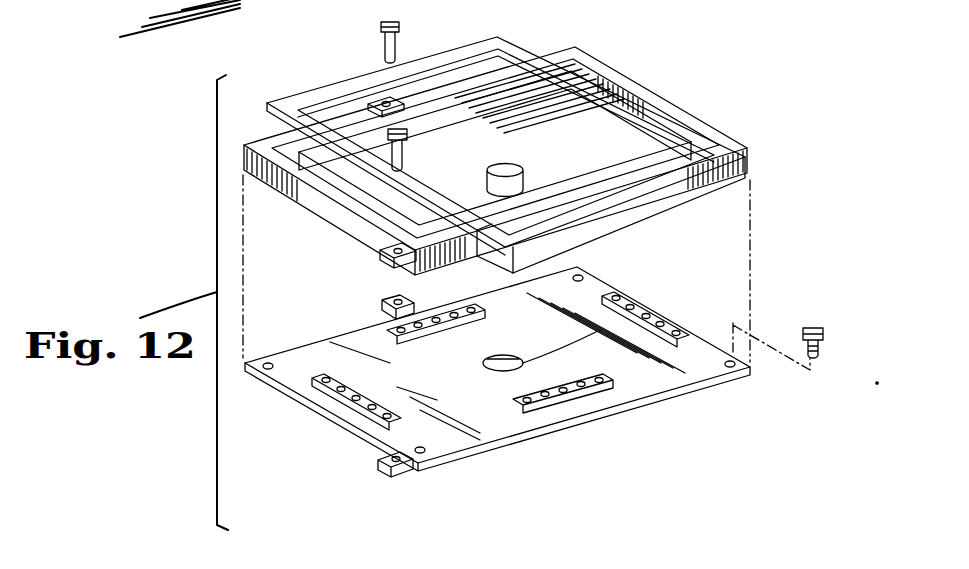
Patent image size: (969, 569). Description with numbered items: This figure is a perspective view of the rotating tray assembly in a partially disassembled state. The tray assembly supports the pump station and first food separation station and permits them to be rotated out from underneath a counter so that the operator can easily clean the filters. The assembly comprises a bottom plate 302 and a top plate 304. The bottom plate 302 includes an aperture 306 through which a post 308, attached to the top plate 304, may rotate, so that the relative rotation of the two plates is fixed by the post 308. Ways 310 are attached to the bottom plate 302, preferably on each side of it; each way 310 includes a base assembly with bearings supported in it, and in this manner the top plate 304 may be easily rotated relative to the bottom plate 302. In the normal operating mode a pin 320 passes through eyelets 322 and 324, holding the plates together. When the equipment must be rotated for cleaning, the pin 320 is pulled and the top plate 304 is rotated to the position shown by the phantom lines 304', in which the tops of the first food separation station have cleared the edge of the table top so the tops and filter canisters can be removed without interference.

The bottom plate 302 is at (697, 397).
The top plate 304 is at (522, 161).
The phantom-line position of top plate 304' is at (506, 138).
The aperture 306 is at (647, 312).
The post 308 is at (667, 100).
The ways 310 is at (580, 402).
The pin 320 is at (390, 168).
The eyelet 322 is at (387, 267).
The eyelet 324 is at (402, 474).